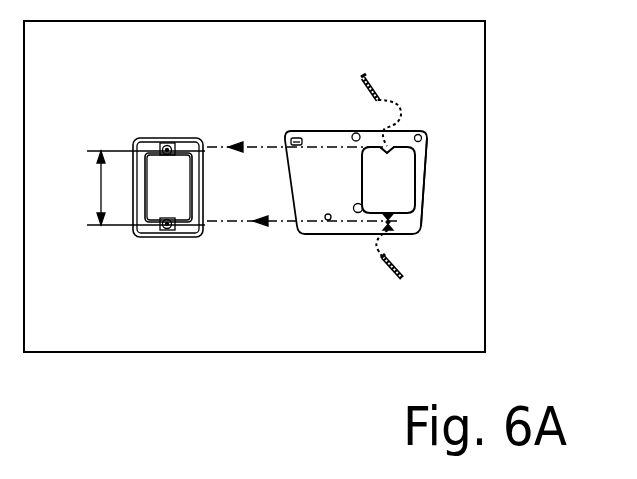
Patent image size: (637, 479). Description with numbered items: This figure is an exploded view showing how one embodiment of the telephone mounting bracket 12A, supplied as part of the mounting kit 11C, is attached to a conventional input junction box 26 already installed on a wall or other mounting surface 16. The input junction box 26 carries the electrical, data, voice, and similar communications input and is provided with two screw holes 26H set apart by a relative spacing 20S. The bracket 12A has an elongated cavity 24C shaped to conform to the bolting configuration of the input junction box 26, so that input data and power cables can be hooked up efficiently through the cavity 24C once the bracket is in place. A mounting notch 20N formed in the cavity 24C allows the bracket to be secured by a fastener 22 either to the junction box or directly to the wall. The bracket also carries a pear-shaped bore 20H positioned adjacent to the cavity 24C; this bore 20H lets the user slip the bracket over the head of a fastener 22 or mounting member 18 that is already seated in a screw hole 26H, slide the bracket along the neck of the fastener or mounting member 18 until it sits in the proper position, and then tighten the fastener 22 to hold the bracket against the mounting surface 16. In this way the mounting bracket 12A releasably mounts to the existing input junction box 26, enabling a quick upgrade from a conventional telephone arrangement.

The mounting surface 16 is at (151, 220).
The input junction box 26 is at (175, 141).
The screw holes 26H is at (180, 150).
The relative spacing 20S is at (128, 188).
The mounting kit 11C is at (335, 249).
The mounting member 18 is at (357, 133).
The bracket 12A is at (436, 155).
The cavity 24C is at (395, 217).
The mounting notch 20N is at (400, 143).
The pear-shaped bore 20H is at (407, 207).
The fastener member 22 is at (373, 87).